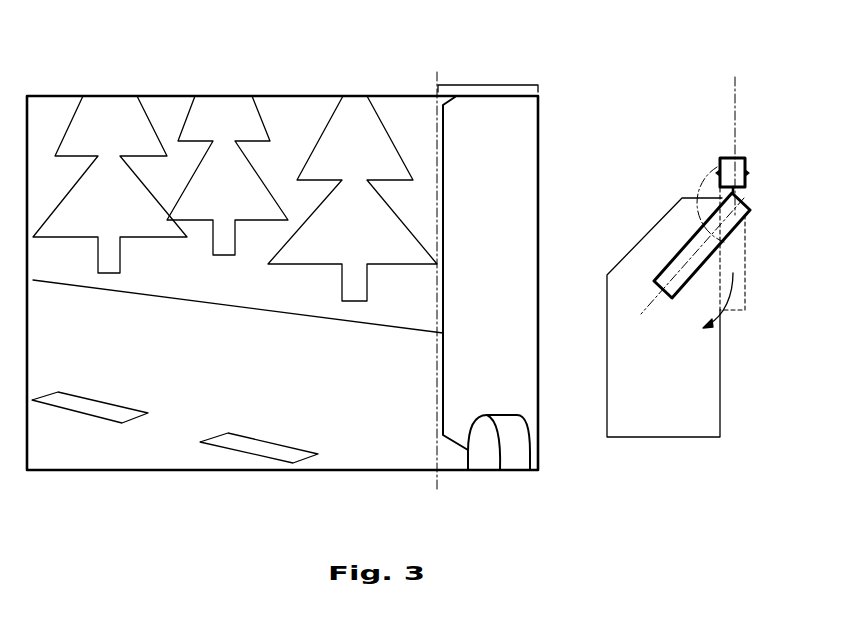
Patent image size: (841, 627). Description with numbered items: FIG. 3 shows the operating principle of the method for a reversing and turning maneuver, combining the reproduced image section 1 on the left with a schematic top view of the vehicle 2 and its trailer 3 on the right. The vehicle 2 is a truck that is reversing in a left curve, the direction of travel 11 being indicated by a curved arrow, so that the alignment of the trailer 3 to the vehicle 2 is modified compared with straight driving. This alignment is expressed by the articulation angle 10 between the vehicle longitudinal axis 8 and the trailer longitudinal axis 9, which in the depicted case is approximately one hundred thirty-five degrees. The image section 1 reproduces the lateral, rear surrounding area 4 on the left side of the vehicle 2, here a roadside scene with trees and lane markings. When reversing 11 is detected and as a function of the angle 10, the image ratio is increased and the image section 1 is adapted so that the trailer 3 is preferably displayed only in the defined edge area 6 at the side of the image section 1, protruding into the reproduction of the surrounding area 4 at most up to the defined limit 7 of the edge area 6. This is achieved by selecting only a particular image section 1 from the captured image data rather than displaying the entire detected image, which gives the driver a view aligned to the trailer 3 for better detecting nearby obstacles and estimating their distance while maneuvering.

The image section 1 is at (173, 97).
The vehicle 2 is at (745, 157).
The trailer 3 is at (727, 243).
The surrounding area 4 is at (664, 317).
The edge area 6 is at (488, 85).
The limit of the edge area 7 is at (432, 123).
The vehicle longitudinal axis 8 is at (737, 110).
The trailer longitudinal axis 9 is at (688, 272).
The articulation angle 10 is at (703, 180).
The direction of travel 11 is at (725, 304).